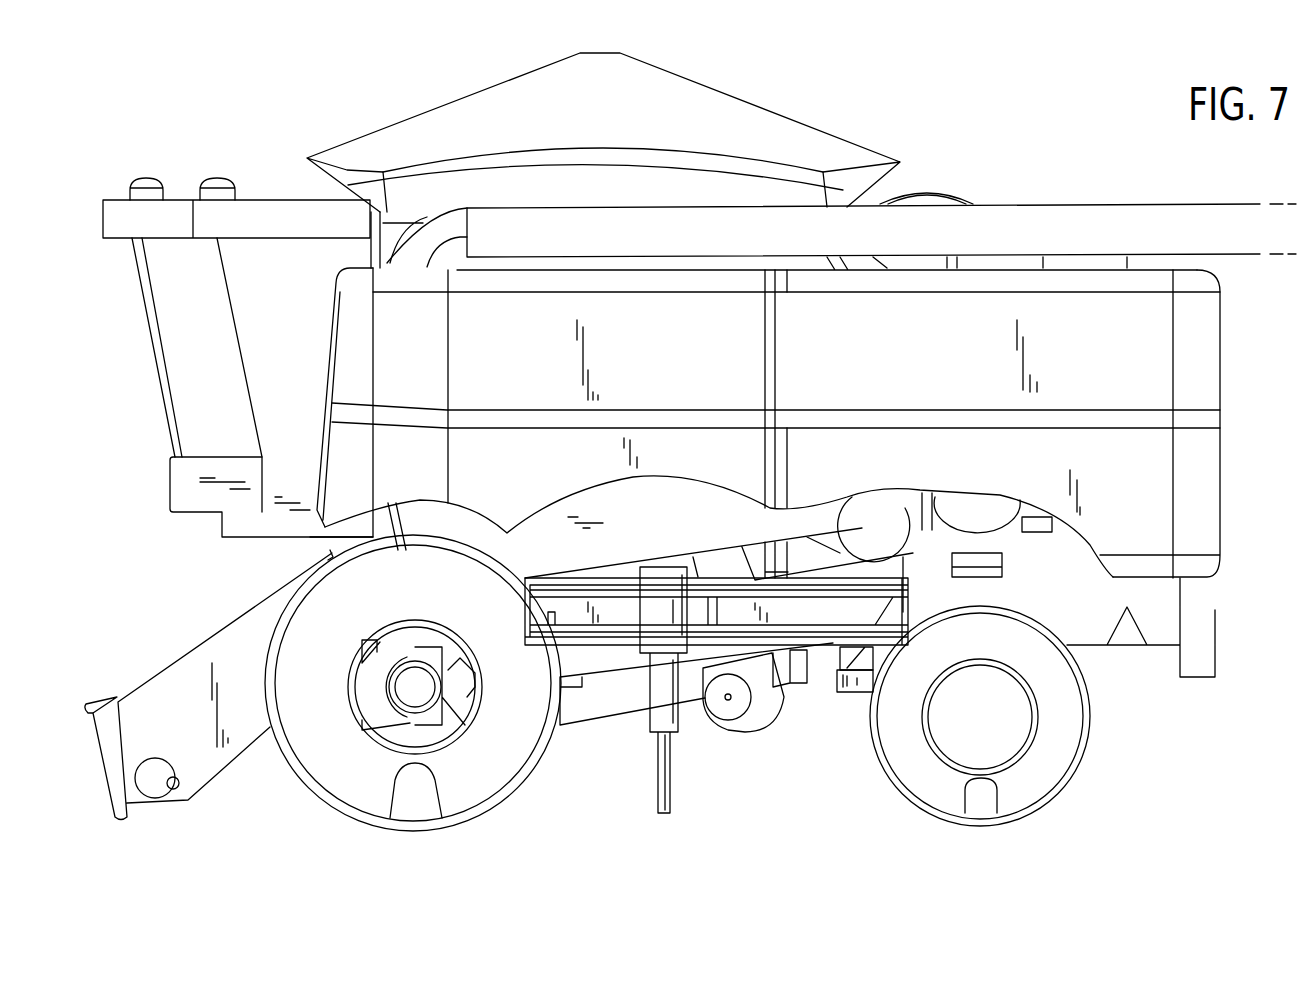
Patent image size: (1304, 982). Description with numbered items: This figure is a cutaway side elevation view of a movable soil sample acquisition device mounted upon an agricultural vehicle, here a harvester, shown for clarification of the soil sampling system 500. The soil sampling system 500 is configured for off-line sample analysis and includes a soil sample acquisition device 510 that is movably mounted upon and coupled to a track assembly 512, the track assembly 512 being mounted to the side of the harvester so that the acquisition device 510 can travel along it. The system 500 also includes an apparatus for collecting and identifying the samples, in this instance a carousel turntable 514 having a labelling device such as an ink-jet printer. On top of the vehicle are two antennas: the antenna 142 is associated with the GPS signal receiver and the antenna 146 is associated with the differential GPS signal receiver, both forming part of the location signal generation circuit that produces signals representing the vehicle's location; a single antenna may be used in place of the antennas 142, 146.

The antenna 142 is at (148, 178).
The antenna 146 is at (215, 178).
The soil sampling system 500 is at (753, 832).
The soil sample acquisition device 510 is at (647, 733).
The track assembly 512 is at (612, 640).
The carousel turntable 514 is at (847, 697).